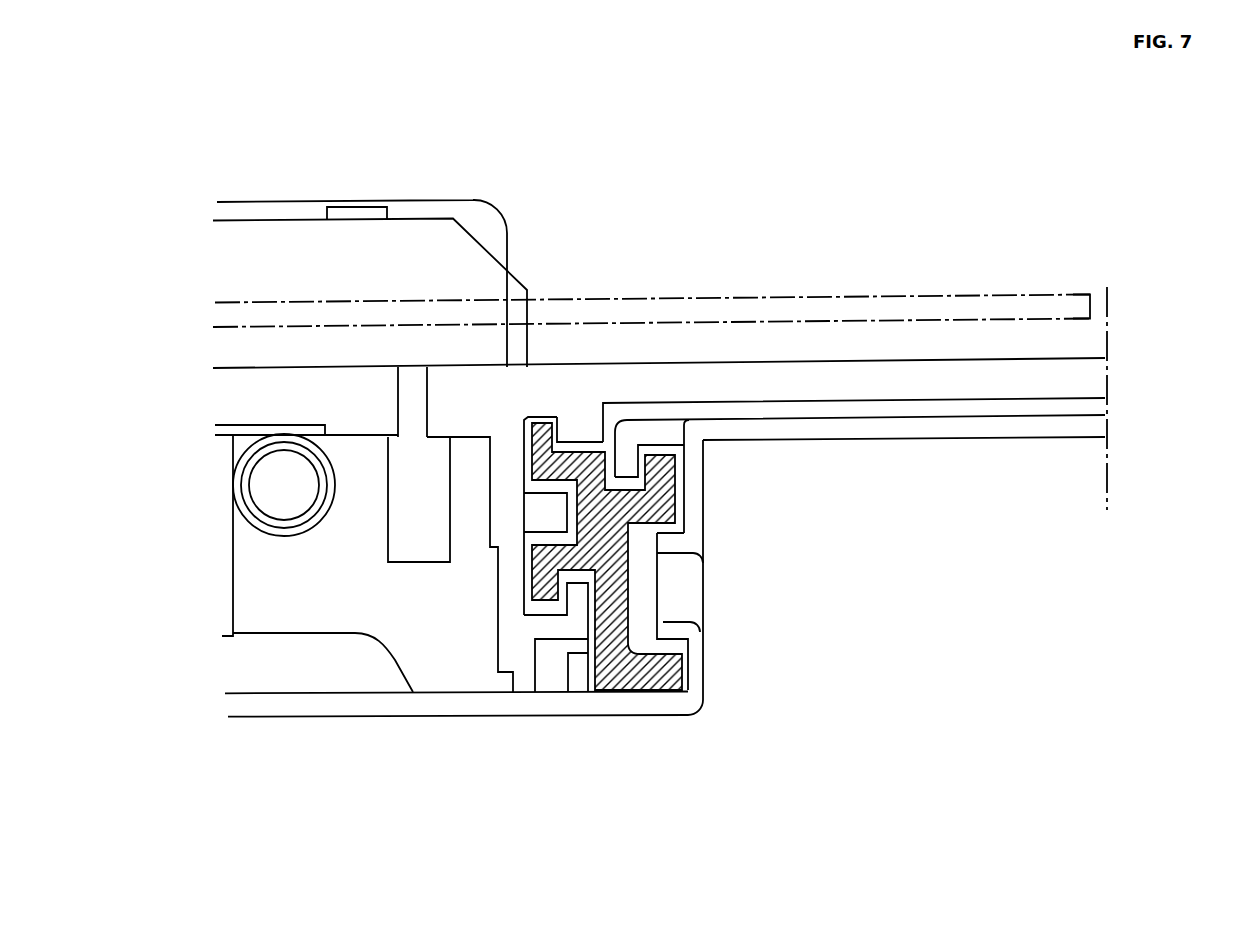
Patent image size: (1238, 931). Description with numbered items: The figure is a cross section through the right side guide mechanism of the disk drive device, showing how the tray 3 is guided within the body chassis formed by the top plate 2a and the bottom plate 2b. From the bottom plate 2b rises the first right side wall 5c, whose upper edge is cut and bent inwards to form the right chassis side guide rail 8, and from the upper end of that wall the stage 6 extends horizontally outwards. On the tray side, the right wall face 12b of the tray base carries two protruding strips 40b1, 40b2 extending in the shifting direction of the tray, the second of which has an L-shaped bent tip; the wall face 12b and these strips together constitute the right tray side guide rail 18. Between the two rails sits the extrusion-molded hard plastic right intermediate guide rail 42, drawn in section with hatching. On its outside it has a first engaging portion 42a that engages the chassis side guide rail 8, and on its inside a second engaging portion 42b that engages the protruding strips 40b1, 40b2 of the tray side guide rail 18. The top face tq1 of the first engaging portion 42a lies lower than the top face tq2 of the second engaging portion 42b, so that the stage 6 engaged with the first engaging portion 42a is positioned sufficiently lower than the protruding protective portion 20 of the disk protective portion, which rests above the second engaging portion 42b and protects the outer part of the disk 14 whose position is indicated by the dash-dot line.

The top plate 2a is at (283, 208).
The bottom plate 2b is at (250, 710).
The tray 3 is at (262, 393).
The first right side wall 5c is at (692, 473).
The stage 6 is at (1005, 428).
The right chassis side guide rail 8 is at (650, 412).
The right wall face of the tray base 12b is at (498, 570).
The disk 14 is at (990, 305).
The right tray side guide rail 18 is at (498, 655).
The protruding protective portion 20 is at (1050, 373).
The protruding strip 40b1 is at (542, 515).
The protruding strip 40b2 is at (558, 632).
The right intermediate guide rail 42 is at (701, 694).
The first engaging portion 42a is at (684, 491).
The second engaging portion 42b is at (530, 413).
The top face of the first engaging portion tq1 is at (668, 452).
The top face of the second engaging portion tq2 is at (538, 424).